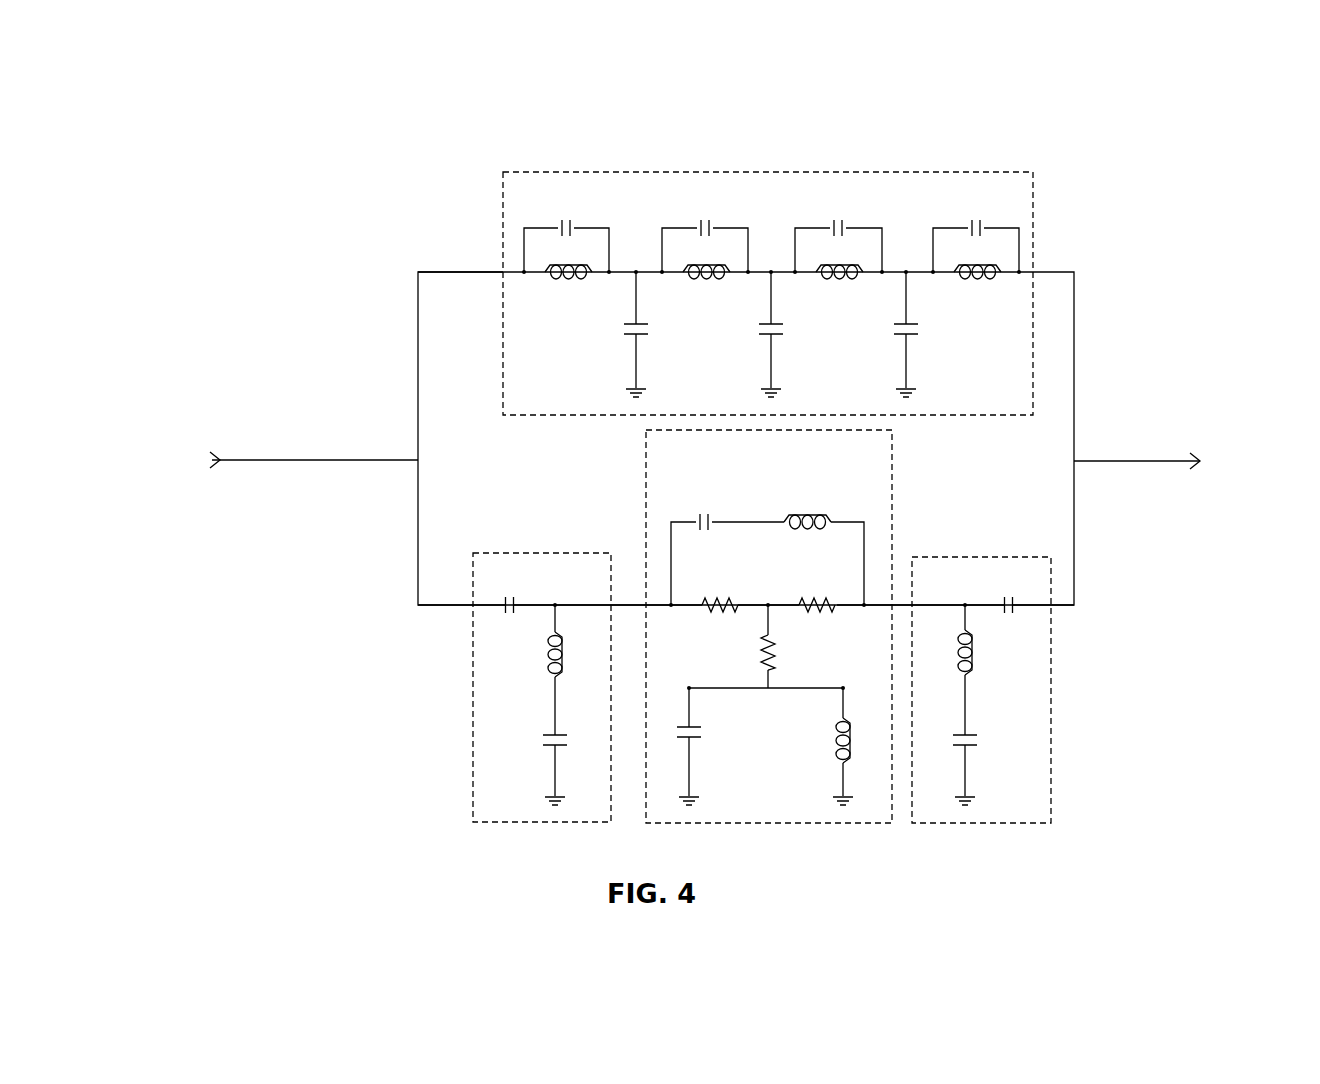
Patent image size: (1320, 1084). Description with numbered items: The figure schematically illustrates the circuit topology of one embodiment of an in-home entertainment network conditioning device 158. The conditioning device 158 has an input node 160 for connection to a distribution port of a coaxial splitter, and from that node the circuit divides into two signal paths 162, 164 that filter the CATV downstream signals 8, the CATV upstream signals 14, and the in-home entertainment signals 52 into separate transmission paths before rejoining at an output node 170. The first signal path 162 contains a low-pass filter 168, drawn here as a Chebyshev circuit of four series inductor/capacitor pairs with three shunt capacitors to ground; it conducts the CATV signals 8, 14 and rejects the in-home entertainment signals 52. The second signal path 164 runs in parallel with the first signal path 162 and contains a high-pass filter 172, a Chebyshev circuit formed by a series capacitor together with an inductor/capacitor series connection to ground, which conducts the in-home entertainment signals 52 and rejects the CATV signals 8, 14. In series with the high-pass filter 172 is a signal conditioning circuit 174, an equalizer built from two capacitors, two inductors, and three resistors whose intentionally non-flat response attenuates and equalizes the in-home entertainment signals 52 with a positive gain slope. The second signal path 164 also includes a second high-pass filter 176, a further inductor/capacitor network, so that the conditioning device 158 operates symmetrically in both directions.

The conditioning device 158 is at (1073, 196).
The input node 160 is at (276, 460).
The first signal path 162 is at (432, 272).
The second signal path 164 is at (418, 500).
The low-pass filter 168 is at (773, 182).
The output node 170 is at (1162, 462).
The high-pass filter 172 is at (487, 657).
The signal conditioning circuit 174 is at (882, 508).
The second high-pass filter 176 is at (1035, 643).
The CATV downstream signals 8 is at (375, 362).
The CATV upstream signals 14 is at (402, 307).
The in-home entertainment signals 52 is at (402, 480).